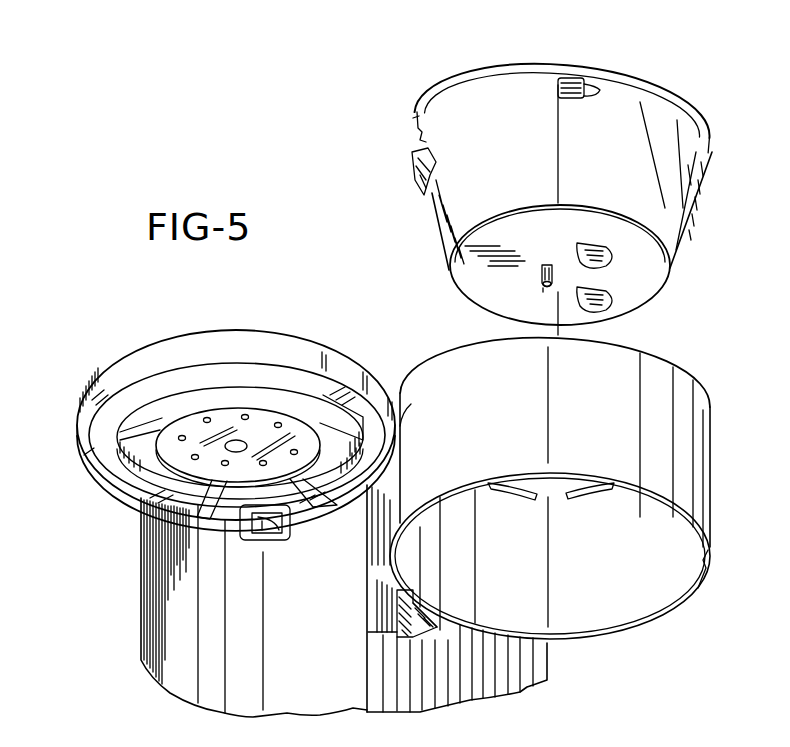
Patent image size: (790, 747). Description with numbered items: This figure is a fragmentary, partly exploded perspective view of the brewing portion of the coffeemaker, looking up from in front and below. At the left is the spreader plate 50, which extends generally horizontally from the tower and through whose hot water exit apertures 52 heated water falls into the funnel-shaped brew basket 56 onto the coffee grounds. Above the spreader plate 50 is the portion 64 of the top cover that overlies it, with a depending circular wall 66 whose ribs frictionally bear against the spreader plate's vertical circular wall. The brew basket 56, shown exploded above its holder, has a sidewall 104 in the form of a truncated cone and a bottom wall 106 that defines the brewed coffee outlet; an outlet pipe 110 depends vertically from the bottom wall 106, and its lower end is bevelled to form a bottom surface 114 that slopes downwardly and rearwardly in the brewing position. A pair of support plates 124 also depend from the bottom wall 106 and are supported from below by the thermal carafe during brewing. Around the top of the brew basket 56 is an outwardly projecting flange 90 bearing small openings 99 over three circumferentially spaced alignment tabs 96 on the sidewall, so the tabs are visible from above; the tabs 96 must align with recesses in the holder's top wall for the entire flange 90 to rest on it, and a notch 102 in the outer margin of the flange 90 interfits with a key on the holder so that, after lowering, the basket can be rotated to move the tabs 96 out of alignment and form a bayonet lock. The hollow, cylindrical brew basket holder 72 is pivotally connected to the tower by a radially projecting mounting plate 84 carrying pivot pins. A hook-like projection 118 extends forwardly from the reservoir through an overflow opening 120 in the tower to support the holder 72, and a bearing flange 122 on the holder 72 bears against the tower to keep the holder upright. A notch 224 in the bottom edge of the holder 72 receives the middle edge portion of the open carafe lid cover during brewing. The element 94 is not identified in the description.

The spreader plate 50 is at (282, 507).
The hot water exit apertures 52 is at (245, 415).
The brew basket 56 is at (552, 179).
The portion of the top cover overlying the spreader plate 64 is at (236, 399).
The depending circular wall 66 is at (115, 362).
The brew basket holder 72 is at (586, 485).
The mounting plate 84 is at (417, 643).
The brew basket flange 90 is at (481, 84).
The tab 94 is at (598, 497).
The alignment tabs 96 is at (600, 90).
The small openings 99 is at (572, 78).
The notch 102 is at (416, 130).
The sidewall 104 is at (693, 173).
The bottom wall 106 is at (460, 270).
The outlet pipe 110 is at (541, 278).
The bottom surface 114 is at (543, 292).
The hook-like projection 118 is at (258, 532).
The overflow opening 120 is at (283, 522).
The bearing flange 122 is at (390, 573).
The support plates 124 is at (605, 300).
The notch 224 is at (705, 572).